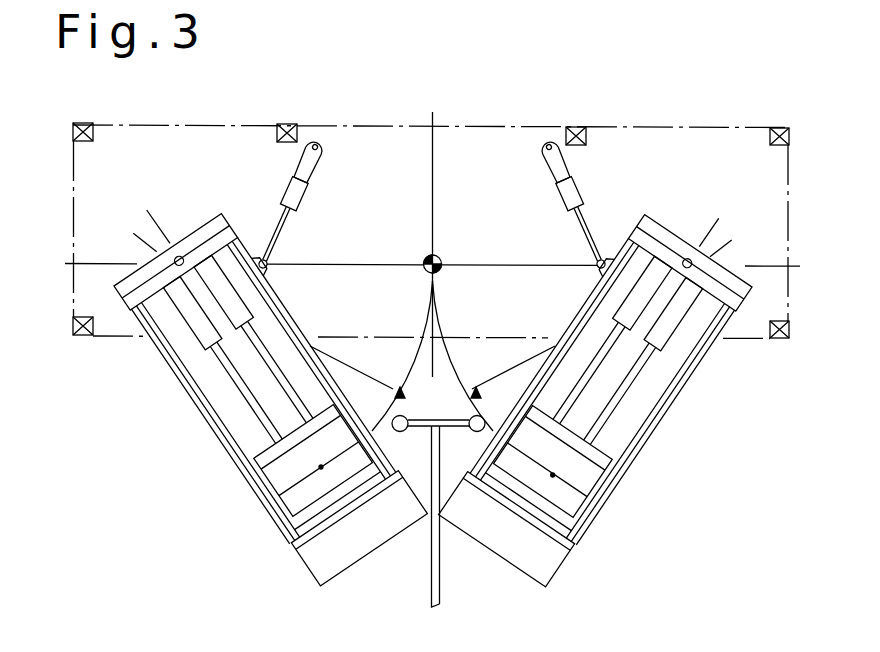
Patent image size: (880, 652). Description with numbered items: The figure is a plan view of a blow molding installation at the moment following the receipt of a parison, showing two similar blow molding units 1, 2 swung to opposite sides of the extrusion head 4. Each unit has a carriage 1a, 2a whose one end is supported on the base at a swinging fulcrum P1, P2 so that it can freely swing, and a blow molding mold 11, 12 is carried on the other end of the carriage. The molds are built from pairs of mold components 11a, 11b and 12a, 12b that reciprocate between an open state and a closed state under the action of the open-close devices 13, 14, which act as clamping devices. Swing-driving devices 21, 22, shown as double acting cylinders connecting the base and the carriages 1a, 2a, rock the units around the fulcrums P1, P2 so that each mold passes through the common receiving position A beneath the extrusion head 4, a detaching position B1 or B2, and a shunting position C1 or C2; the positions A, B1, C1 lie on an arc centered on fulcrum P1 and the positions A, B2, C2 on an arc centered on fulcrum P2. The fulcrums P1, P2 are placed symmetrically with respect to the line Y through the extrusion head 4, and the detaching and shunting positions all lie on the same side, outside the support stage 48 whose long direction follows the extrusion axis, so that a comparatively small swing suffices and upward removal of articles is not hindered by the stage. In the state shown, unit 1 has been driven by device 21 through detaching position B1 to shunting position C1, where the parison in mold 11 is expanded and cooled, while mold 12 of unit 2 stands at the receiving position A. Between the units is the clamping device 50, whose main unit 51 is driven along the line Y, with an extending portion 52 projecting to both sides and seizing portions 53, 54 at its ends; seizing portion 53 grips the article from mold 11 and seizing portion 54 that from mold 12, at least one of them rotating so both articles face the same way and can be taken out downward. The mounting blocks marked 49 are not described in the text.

The blow molding unit 1 is at (255, 396).
The carriage 1a is at (313, 563).
The blow molding unit 2 is at (608, 388).
The carriage 2a is at (553, 563).
The extrusion head 4 is at (439, 257).
The blow molding mold 11 is at (271, 501).
The mold component 11a is at (255, 497).
The mold component 11b is at (280, 527).
The blow molding mold 12 is at (598, 503).
The mold component 12a is at (613, 498).
The mold component 12b is at (590, 530).
The open-close device 13 is at (218, 282).
The open-close device 14 is at (642, 293).
The swing-driving device 21 is at (305, 196).
The swing-driving device 22 is at (578, 187).
The support stage 48 is at (701, 124).
The mounting blocks 49 is at (84, 122).
The clamping device 50 is at (441, 573).
The main unit 51 is at (431, 578).
The extending portion 52 is at (441, 419).
The seizing portion 53 is at (402, 431).
The seizing portion 54 is at (475, 431).
The receiving position A is at (427, 259).
The detaching position B1 is at (399, 386).
The detaching position B2 is at (473, 386).
The shunting position C1 is at (324, 483).
The shunting position C2 is at (542, 491).
The swinging fulcrum P1 is at (181, 258).
The swinging fulcrum P2 is at (686, 262).
The line Y is at (425, 12).